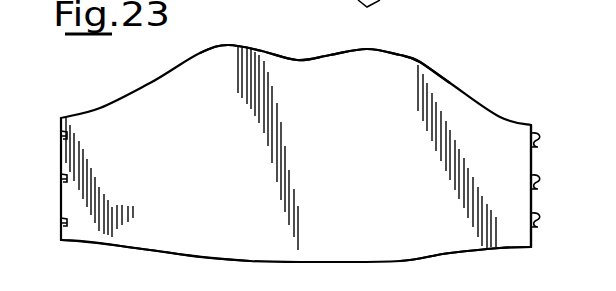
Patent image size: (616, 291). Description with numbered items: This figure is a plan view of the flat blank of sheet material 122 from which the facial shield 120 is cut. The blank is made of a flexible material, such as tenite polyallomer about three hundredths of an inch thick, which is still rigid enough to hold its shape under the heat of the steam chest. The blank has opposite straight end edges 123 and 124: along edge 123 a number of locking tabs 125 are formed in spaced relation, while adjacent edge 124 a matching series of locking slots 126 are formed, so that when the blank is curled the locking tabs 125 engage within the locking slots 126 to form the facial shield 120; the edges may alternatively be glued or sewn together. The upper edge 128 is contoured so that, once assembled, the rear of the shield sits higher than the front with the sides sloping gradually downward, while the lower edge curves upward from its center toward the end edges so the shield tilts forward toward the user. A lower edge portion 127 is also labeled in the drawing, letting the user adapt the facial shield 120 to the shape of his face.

The facial shield 120 is at (118, 82).
The blank of sheet material 122 is at (157, 237).
The end edge 123 is at (533, 160).
The end edge 124 is at (62, 129).
The locking tabs 125 is at (538, 138).
The locking slots 126 is at (63, 178).
The bottom edge portion 127 is at (418, 260).
The upper edge 128 is at (420, 60).